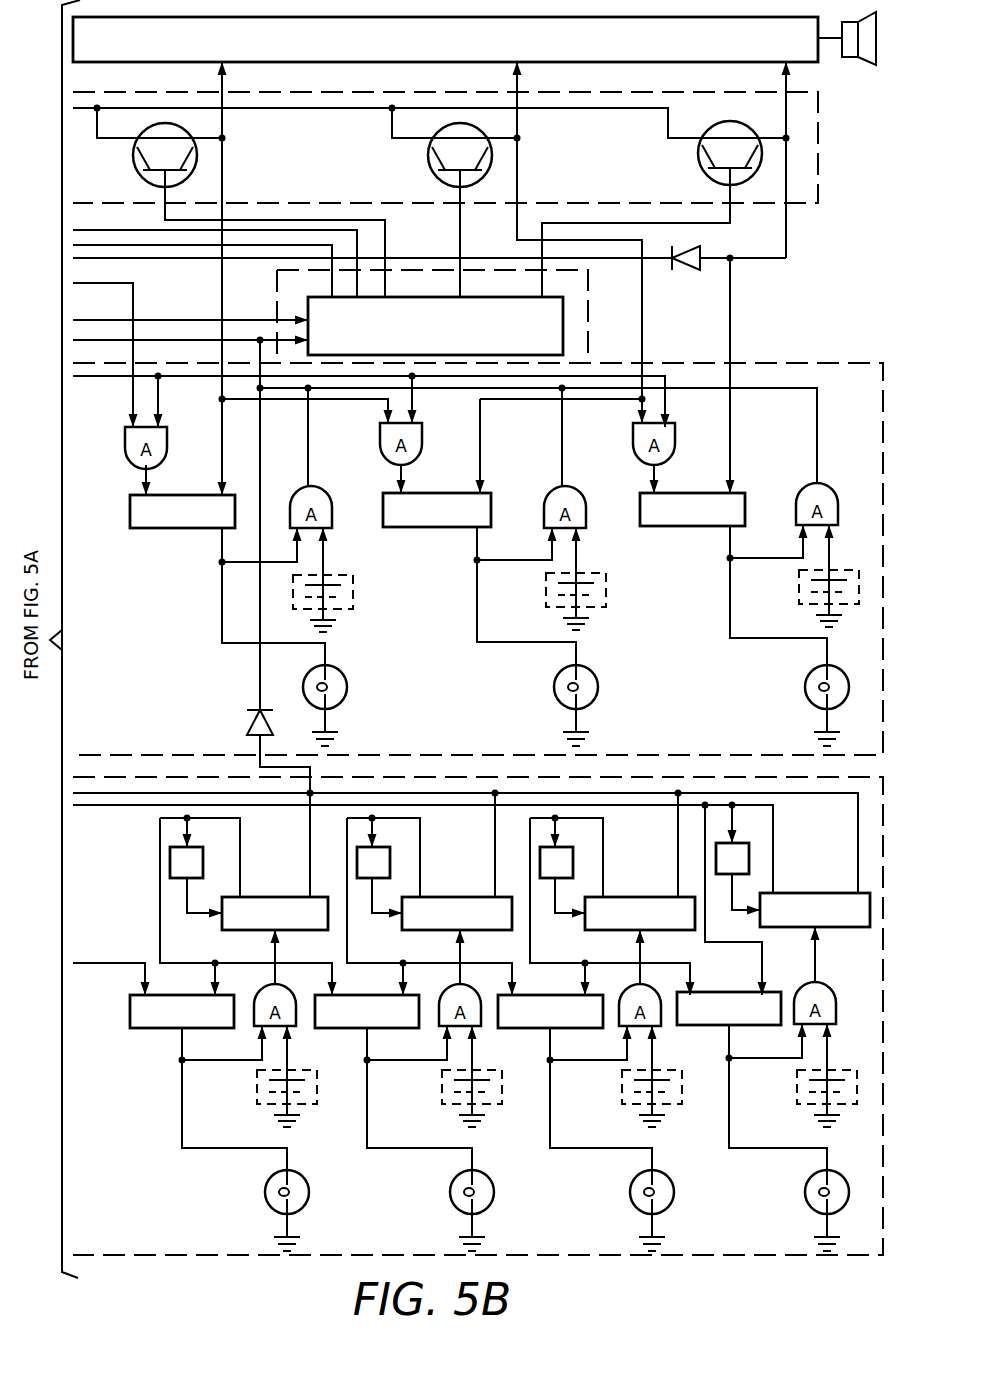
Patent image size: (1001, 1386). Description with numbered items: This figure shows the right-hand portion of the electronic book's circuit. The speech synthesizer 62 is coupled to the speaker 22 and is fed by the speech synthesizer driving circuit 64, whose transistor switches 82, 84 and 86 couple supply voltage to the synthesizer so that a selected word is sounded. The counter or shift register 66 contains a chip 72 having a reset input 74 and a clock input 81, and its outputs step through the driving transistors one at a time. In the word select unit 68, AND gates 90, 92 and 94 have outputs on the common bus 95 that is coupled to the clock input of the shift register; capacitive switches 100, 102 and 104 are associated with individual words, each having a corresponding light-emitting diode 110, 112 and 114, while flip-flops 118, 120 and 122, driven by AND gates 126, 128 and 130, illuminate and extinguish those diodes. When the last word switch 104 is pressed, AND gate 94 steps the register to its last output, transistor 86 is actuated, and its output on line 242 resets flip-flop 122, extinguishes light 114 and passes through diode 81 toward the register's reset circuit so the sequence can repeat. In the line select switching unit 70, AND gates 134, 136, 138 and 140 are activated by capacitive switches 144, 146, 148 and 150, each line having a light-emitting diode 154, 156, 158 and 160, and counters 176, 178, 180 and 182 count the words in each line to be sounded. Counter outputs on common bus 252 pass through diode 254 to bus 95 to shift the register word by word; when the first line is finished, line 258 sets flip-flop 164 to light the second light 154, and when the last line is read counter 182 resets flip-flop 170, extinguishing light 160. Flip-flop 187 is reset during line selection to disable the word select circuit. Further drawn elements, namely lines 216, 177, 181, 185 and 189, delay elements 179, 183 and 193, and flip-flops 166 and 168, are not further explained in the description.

The speech synthesizer 62 is at (388, 51).
The speaker 22 is at (858, 50).
The speech synthesizer driving circuit 64 is at (818, 146).
The transistor switch 82 is at (142, 173).
The transistor switch 84 is at (437, 172).
The transistor switch 86 is at (705, 170).
The line 242 is at (786, 232).
The line 216 is at (281, 247).
The clock signal input 81 is at (696, 266).
The counter or shift register 66 is at (588, 315).
The shift register chip 72 is at (463, 338).
The reset input 74 is at (198, 318).
The common bus 95 is at (817, 425).
The word select unit 68 is at (812, 363).
The AND gate 126 is at (167, 435).
The AND gate 128 is at (422, 430).
The AND gate 130 is at (675, 430).
The flip-flop 118 is at (160, 530).
The flip-flop 120 is at (445, 528).
The flip-flop 122 is at (690, 527).
The AND gate 90 is at (332, 505).
The AND gate 92 is at (588, 500).
The AND gate 94 is at (838, 495).
The capacitive switch 100 is at (352, 592).
The capacitive switch 102 is at (605, 592).
The capacitive switch 104 is at (800, 588).
The light-emitting diode 110 is at (347, 690).
The light-emitting diode 112 is at (598, 690).
The light-emitting diode 114 is at (805, 690).
The diode 254 is at (250, 725).
The common bus 252 is at (128, 792).
The line select switching unit 70 is at (808, 1255).
The line 177 is at (240, 848).
The line 181 is at (420, 855).
The line 185 is at (603, 838).
The line 189 is at (773, 818).
The delay flip-flop 179 is at (170, 862).
The delay flip-flop 183 is at (365, 878).
The flip-flop 187 is at (548, 878).
The delay flip-flop 193 is at (749, 856).
The counter 176 is at (278, 897).
The counter 178 is at (462, 897).
The counter 180 is at (640, 897).
The counter 182 is at (830, 893).
The line 258 is at (138, 960).
The flip-flop 164 is at (205, 990).
The flip-flop #11 166 is at (392, 990).
The flip-flop #12 168 is at (570, 990).
The flip-flop 170 is at (752, 988).
The AND gate 134 is at (255, 1027).
The AND gate 136 is at (440, 1027).
The AND gate 138 is at (620, 1027).
The AND gate 140 is at (795, 1025).
The capacitive switch 144 is at (260, 1085).
The capacitive switch 146 is at (445, 1085).
The capacitive switch 148 is at (625, 1085).
The capacitive switch 150 is at (800, 1085).
The light-emitting diode 154 is at (265, 1192).
The light-emitting diode 156 is at (450, 1192).
The light-emitting diode 158 is at (630, 1192).
The light-emitting diode 160 is at (805, 1192).